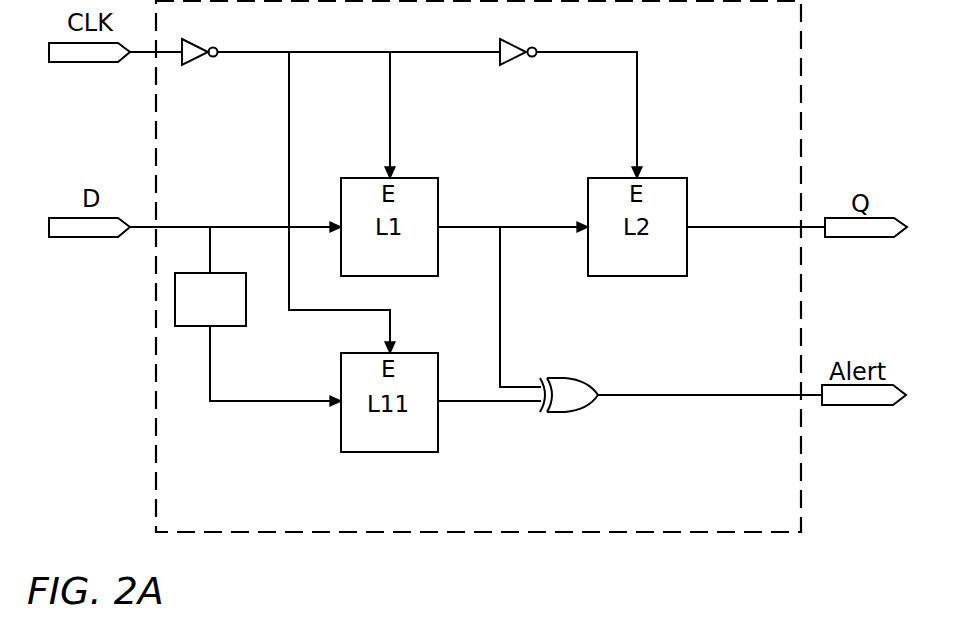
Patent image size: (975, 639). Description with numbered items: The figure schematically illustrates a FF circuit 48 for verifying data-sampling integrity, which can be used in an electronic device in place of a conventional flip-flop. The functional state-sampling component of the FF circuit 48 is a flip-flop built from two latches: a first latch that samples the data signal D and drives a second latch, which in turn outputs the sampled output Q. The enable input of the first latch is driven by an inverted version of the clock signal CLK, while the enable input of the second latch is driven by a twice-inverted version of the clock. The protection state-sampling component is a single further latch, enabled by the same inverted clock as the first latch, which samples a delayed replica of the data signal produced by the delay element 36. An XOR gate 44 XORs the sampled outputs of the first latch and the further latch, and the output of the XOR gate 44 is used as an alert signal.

The delay element 36 is at (175, 298).
The XOR gate 44 is at (578, 378).
The FF circuit 48 is at (801, 325).